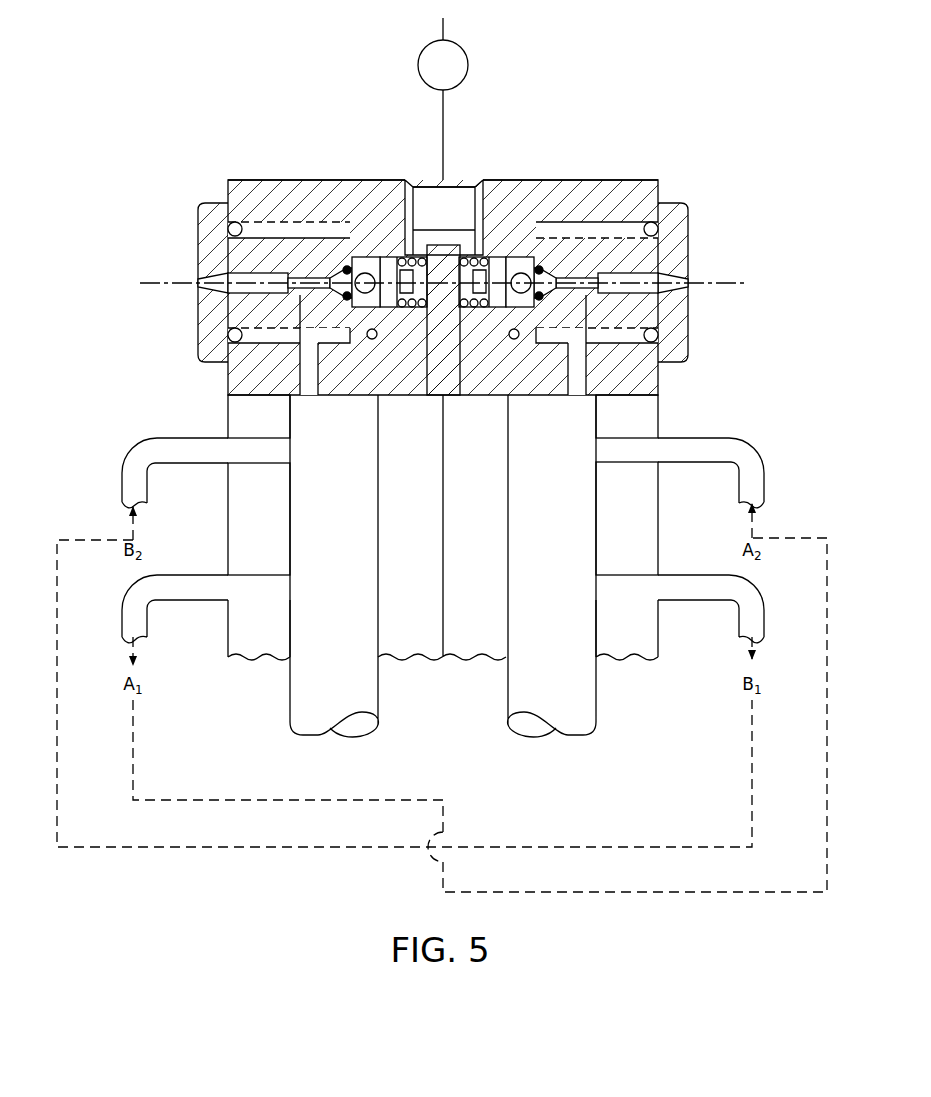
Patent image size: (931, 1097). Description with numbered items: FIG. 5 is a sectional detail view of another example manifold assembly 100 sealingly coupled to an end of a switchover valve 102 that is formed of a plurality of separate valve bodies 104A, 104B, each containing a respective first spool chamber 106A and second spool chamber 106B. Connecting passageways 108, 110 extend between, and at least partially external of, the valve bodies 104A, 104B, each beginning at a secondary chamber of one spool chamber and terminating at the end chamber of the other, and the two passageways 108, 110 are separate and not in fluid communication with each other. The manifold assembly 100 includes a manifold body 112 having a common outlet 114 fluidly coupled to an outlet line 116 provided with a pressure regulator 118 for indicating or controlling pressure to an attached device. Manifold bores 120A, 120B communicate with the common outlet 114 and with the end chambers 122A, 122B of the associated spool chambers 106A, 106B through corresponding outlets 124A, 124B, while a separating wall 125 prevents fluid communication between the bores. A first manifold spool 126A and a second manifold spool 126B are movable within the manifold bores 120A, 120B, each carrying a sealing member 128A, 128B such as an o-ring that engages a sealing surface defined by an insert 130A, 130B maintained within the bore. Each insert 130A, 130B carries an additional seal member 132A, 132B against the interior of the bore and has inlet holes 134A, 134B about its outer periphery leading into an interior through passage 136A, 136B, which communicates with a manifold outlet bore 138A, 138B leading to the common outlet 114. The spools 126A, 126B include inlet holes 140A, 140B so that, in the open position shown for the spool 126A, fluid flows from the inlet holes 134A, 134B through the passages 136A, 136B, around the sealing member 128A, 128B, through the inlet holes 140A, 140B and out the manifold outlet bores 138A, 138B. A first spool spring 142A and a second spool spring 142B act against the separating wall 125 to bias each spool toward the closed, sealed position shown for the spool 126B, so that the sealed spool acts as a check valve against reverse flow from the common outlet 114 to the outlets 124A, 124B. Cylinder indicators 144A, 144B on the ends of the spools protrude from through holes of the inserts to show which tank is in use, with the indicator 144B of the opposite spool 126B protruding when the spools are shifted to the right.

The manifold assembly 100 is at (135, 140).
The switchover valve 102 is at (455, 668).
The valve body 104A is at (228, 562).
The valve body 104B is at (654, 562).
The first spool chamber 106A is at (305, 688).
The second spool chamber 106B is at (582, 688).
The connecting passageway 108 is at (122, 618).
The connecting passageway 110 is at (122, 482).
The manifold body 112 is at (655, 182).
The common outlet 114 is at (455, 178).
The outlet line 116 is at (443, 118).
The pressure regulator 118 is at (418, 66).
The manifold bore 120A is at (318, 221).
The manifold bore 120B is at (568, 221).
The end chamber 122A is at (300, 421).
The end chamber 122B is at (586, 421).
The outlet 124A is at (300, 381).
The outlet 124B is at (586, 381).
The separating wall 125 is at (443, 245).
The first manifold spool 126A is at (232, 271).
The second manifold spool 126B is at (654, 271).
The sealing member 128A is at (347, 262).
The sealing member 128B is at (541, 262).
The insert 130A is at (220, 202).
The insert 130B is at (668, 202).
The seal member 132A is at (228, 336).
The seal member 132B is at (658, 336).
The inlet hole 134A is at (296, 311).
The inlet hole 134B is at (590, 311).
The interior through passage 136A is at (318, 266).
The interior through passage 136B is at (546, 266).
The manifold outlet bore 138A is at (413, 214).
The manifold outlet bore 138B is at (476, 214).
The inlet hole 140A is at (364, 271).
The inlet hole 140B is at (522, 271).
The first spool spring 142A is at (410, 309).
The second spool spring 142B is at (474, 309).
The cylinder indicator 144A is at (194, 287).
The cylinder indicator 144B is at (692, 287).